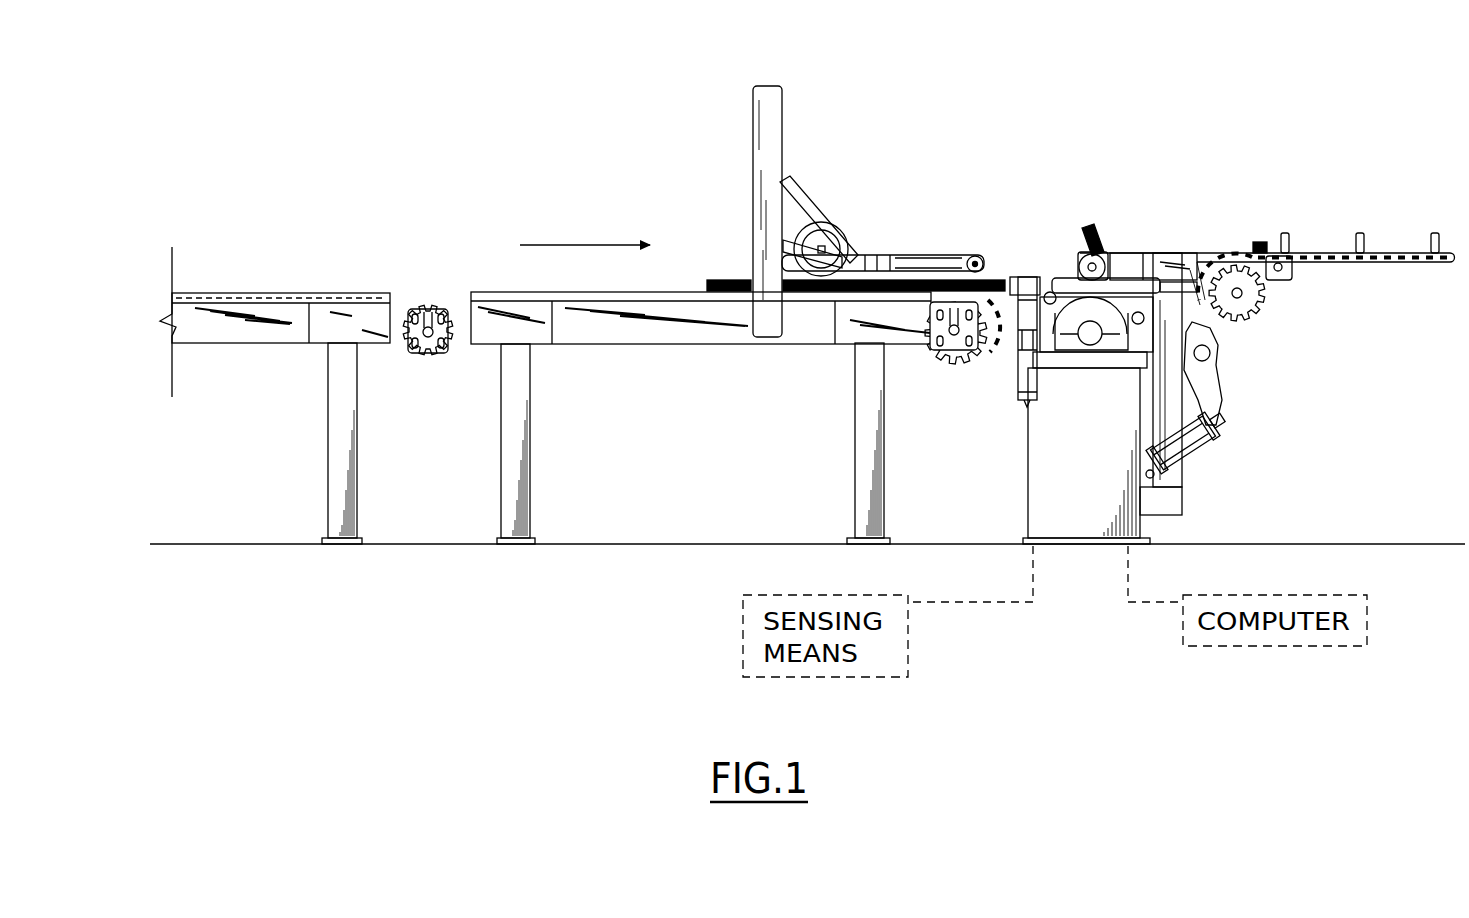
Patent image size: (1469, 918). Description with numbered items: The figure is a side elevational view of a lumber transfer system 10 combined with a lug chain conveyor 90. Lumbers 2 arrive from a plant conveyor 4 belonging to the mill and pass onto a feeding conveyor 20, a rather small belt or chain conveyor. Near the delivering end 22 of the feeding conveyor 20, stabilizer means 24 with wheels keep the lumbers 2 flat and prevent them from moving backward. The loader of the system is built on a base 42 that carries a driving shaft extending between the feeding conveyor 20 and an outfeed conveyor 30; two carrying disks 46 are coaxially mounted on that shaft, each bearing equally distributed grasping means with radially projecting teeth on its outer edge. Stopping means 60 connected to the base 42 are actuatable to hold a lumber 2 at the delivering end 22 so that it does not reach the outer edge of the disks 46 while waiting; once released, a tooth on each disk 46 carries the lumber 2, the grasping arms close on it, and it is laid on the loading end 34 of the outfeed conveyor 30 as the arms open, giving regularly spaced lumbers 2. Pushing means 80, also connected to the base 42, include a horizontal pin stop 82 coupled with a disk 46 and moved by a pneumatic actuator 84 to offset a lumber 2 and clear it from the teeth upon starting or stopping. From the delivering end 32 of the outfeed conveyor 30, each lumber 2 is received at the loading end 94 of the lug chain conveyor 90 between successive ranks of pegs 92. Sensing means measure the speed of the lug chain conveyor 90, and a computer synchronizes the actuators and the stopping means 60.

The lumber 2 is at (820, 294).
The plant conveyor 4 is at (250, 250).
The lumber transfer system 10 is at (904, 80).
The feeding conveyor 20 is at (685, 290).
The delivering end 22 is at (1005, 276).
The stabilizer means 24 is at (784, 128).
The outfeed conveyor 30 is at (1176, 252).
The delivering end 32 is at (1116, 256).
The loading end 34 is at (1271, 253).
The base 42 is at (1046, 485).
The carrying disk 46 is at (1040, 278).
The stopping means 60 is at (1008, 338).
The pushing means 80 is at (1062, 262).
The horizontal pin stop 82 is at (1143, 297).
The pneumatic actuator 84 is at (1196, 468).
The lug chain conveyor 90 is at (1313, 237).
The pegs 92 is at (1360, 233).
The loading end 94 is at (1242, 252).